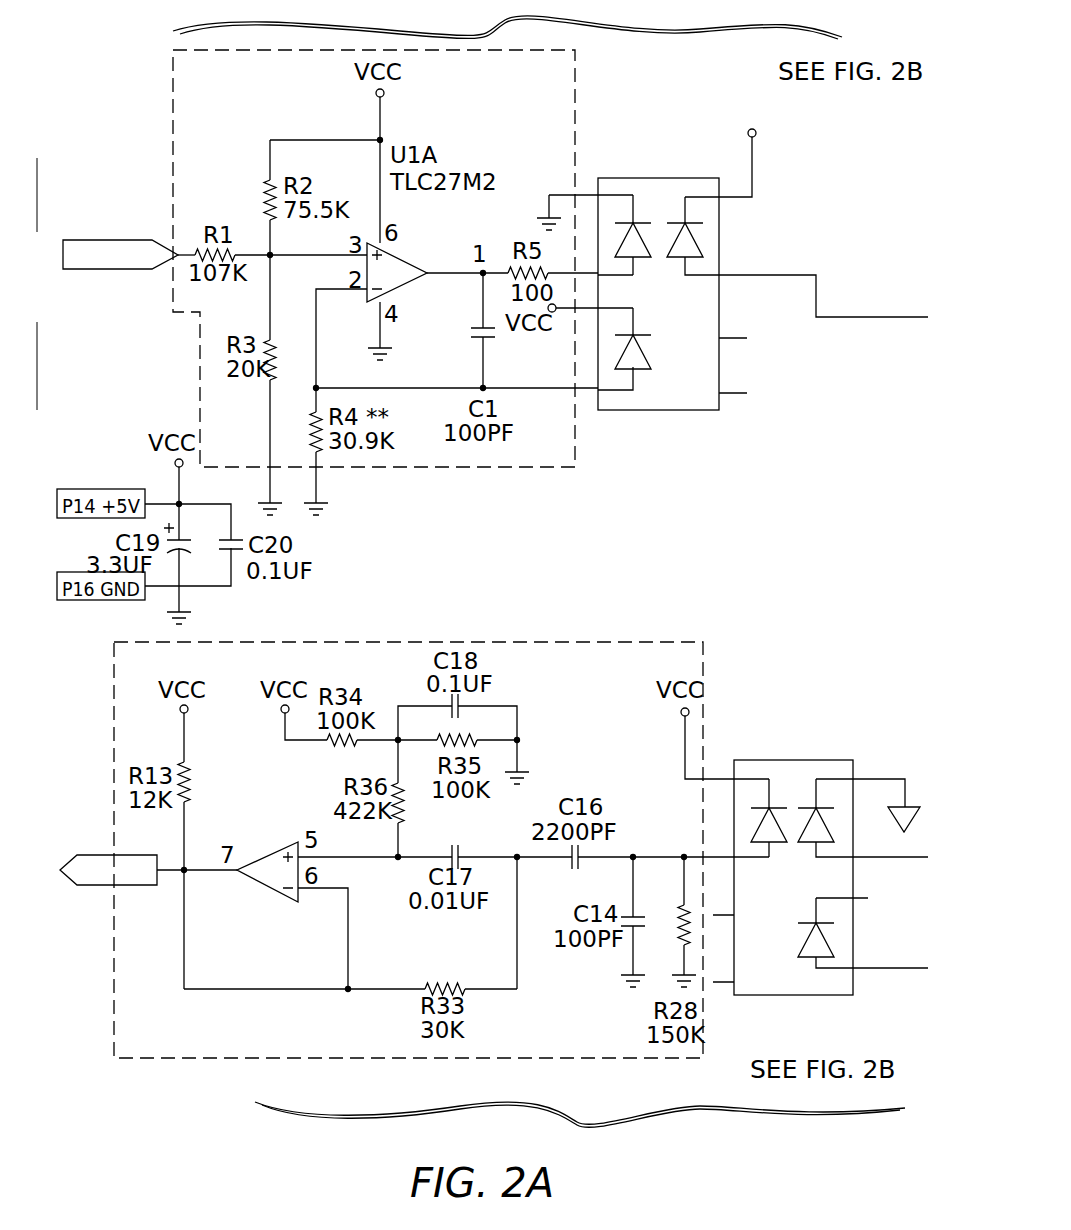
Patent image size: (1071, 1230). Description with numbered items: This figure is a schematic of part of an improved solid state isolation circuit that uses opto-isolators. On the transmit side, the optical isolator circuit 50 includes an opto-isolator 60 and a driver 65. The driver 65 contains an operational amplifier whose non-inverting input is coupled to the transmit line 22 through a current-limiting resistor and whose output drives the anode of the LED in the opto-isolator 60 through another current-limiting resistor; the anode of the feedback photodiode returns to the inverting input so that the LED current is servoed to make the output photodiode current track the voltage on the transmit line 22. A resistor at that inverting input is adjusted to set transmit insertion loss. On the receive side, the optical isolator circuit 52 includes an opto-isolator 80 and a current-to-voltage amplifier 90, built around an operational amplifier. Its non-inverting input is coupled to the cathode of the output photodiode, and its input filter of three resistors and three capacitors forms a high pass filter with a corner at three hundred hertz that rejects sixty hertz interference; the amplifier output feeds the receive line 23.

The transmit line 22 is at (100, 240).
The receive line 23 is at (100, 885).
The optical isolator circuit 50 is at (507, 19).
The optical isolator circuit 52 is at (580, 1128).
The opto-isolator 60 is at (662, 410).
The driver 65 is at (478, 468).
The opto-isolator 80 is at (800, 995).
The current-to-voltage amplifier 90 is at (225, 1058).